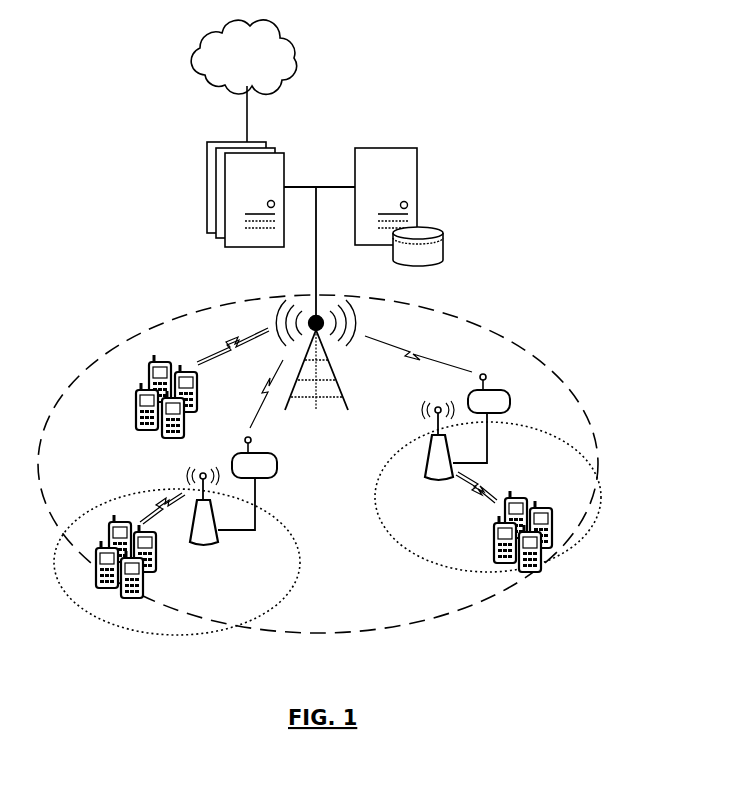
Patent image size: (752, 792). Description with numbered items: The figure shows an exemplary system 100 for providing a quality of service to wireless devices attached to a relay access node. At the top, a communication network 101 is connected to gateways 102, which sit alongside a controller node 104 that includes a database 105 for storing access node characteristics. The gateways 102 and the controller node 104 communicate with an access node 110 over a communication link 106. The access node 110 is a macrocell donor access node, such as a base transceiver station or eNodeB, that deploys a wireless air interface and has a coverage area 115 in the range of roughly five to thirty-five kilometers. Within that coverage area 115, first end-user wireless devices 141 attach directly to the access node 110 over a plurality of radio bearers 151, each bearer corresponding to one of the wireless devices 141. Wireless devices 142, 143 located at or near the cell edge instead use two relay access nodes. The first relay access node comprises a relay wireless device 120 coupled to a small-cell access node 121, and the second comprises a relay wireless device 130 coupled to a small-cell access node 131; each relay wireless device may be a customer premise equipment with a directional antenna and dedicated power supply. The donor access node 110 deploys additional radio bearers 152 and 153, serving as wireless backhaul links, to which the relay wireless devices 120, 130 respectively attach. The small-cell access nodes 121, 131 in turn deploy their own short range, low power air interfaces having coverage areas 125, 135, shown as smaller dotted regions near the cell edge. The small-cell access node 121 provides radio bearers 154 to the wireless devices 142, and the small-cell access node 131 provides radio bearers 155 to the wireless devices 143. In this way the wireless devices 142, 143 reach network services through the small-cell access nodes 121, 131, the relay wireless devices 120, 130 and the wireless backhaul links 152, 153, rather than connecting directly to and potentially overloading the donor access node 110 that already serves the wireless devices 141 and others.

The system 100 is at (342, 93).
The communication network 101 is at (268, 68).
The gateways 102 is at (207, 142).
The controller node 104 is at (417, 148).
The database 105 is at (443, 228).
The communication link 106 is at (316, 262).
The access node 110 is at (315, 410).
The coverage area 115 is at (397, 626).
The relay wireless device 120 is at (277, 478).
The small-cell access node 121 is at (205, 543).
The coverage area 125 is at (105, 622).
The relay wireless device 130 is at (505, 388).
The small-cell access node 131 is at (432, 479).
The coverage area 135 is at (585, 532).
The wireless devices 141 is at (125, 409).
The wireless devices 142 is at (158, 581).
The wireless devices 143 is at (484, 549).
The radio bearers 151 is at (236, 340).
The radio bearer (wireless backhaul link) 152 is at (270, 393).
The radio bearer (wireless backhaul link) 153 is at (412, 350).
The radio bearers 154 is at (160, 503).
The radio bearers 155 is at (482, 481).